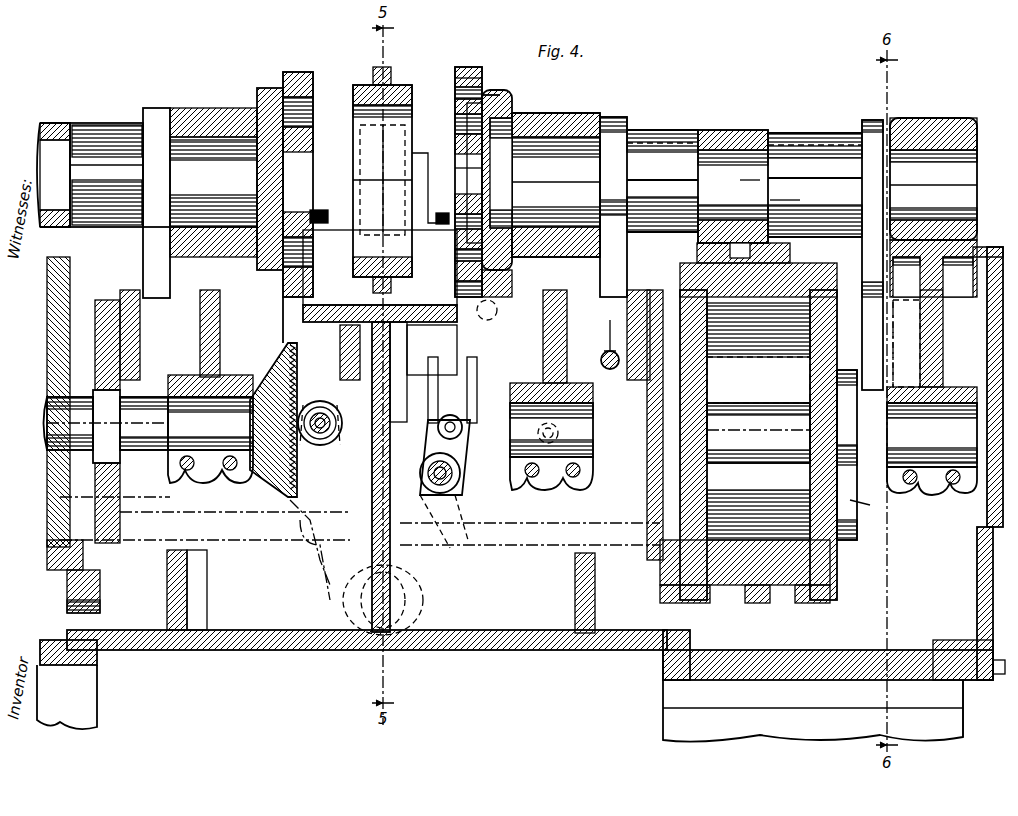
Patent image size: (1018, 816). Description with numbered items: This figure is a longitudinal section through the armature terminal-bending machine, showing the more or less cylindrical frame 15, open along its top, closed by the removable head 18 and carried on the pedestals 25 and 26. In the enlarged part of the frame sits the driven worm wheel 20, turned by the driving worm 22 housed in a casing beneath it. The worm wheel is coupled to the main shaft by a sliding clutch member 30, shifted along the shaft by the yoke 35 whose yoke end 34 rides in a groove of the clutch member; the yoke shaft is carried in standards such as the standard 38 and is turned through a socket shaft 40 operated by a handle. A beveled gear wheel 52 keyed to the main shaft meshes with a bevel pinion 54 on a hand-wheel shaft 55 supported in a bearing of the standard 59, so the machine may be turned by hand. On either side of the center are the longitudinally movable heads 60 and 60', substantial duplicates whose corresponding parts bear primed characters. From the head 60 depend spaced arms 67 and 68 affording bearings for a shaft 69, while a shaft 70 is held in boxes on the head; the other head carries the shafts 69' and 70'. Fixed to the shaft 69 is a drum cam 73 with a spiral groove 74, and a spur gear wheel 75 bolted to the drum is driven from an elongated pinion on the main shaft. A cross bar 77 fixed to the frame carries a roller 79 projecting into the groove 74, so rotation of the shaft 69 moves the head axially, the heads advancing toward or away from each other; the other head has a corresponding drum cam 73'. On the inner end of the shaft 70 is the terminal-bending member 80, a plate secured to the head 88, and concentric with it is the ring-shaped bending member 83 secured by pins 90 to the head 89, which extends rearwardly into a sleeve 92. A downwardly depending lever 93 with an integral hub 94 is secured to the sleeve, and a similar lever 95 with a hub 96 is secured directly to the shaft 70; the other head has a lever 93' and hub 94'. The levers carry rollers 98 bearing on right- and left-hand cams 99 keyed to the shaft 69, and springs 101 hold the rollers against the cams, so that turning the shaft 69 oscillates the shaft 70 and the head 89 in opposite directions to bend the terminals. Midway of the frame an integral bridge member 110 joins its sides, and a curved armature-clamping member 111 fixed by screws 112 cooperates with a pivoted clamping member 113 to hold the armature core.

The frame 15 is at (663, 690).
The removable head 18 is at (987, 500).
The driven worm wheel 20 is at (430, 575).
The driving worm 22 is at (420, 603).
The pedestal 25 is at (97, 678).
The pedestal 26 is at (945, 708).
The coöperating clutch member 30 is at (505, 372).
The yoke end 34 is at (450, 415).
The yoke 35 is at (470, 460).
The standard 38 is at (462, 470).
The socket shaft 40 is at (455, 500).
The beveled gear wheel 52 is at (285, 312).
The bevel pinion 54 is at (275, 397).
The shaft 55 is at (330, 400).
The standard 59 is at (932, 441).
The longitudinally movable head 60 is at (560, 189).
The longitudinally movable head 60' is at (60, 150).
The arm 67 is at (250, 348).
The arm 68 is at (928, 334).
The shaft 69 is at (657, 445).
The shaft 69' is at (91, 425).
The shaft 70 is at (684, 137).
The shaft 70' is at (184, 180).
The drum cam 73 is at (763, 417).
The drum cam 73' is at (68, 390).
The spiral groove 74 is at (765, 268).
The spur gear wheel 75 is at (125, 170).
The cross bar 77 is at (778, 235).
The roller 79 is at (740, 235).
The armature terminal-bending member 80 is at (468, 142).
The bending plate or member 83 is at (455, 76).
The head 88 is at (506, 96).
The head 89 is at (465, 67).
The pins 90 is at (492, 90).
The sleeve 92 is at (545, 113).
The downwardly depending lever 93 is at (705, 277).
The lever 93' is at (172, 211).
The hub 94 is at (662, 167).
The hub 94' is at (106, 159).
The lever 95 is at (872, 120).
The hub 96 is at (810, 133).
The roller 98 is at (845, 370).
The cam 99 is at (870, 515).
The spring 101 is at (610, 320).
The bridge member 110 is at (345, 305).
The curved armature-clamping member 111 is at (388, 252).
The screws 112 is at (318, 208).
The coöperating clamping member 113 is at (366, 82).